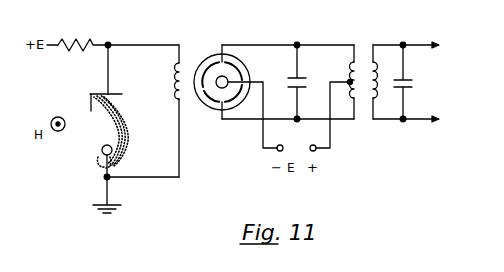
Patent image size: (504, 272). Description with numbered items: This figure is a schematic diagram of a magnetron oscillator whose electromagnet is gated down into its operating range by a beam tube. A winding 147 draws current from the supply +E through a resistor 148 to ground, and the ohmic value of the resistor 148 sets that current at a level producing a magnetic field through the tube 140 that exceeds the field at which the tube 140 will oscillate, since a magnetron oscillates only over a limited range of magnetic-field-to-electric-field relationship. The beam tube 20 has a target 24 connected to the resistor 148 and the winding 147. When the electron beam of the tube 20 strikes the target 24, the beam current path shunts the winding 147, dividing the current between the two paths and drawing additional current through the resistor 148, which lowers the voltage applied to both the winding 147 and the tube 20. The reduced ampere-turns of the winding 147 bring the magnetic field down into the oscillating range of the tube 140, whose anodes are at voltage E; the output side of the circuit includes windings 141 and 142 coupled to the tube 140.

The tube 20 is at (166, 141).
The target 24 is at (91, 93).
The tube 140 is at (212, 52).
The transformer primary winding 141 is at (341, 37).
The transformer secondary winding 142 is at (385, 42).
The winding 147 is at (168, 66).
The resistor 148 is at (79, 36).